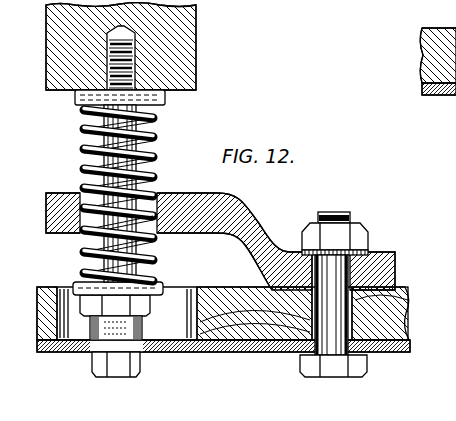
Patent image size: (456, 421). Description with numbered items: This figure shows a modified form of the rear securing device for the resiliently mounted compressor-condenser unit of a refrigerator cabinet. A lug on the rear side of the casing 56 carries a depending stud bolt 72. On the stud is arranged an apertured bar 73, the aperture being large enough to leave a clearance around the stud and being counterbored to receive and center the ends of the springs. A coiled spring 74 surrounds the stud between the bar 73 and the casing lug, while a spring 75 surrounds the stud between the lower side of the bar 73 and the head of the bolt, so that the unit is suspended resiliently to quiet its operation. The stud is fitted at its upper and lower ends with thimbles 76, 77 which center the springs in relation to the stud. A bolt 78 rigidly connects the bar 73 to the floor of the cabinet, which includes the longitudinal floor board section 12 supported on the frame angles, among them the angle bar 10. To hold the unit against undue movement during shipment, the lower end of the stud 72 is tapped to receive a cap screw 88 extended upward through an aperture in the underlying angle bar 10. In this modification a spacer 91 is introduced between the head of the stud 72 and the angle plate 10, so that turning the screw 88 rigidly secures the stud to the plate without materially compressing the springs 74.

The casing 56 is at (196, 22).
The thimble 76 is at (76, 99).
The stud bolt 72 is at (150, 131).
The coiled spring 74 is at (84, 168).
The spring 75 is at (82, 257).
The apertured bar 73 is at (245, 221).
The bolt 78 is at (348, 222).
The thimble 77 is at (75, 285).
The spacer 91 is at (92, 330).
The cap screw 88 is at (140, 367).
The angle bar 10 is at (218, 350).
The longitudinal floor board section 12 is at (272, 352).